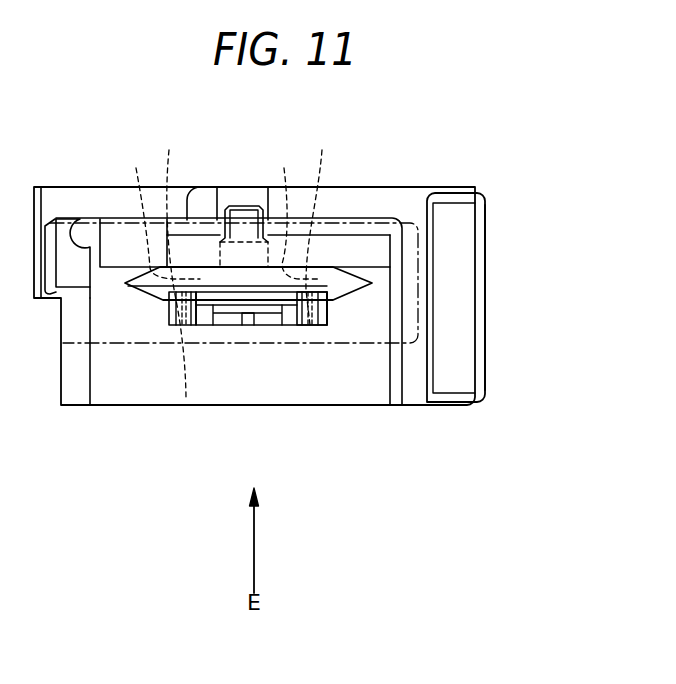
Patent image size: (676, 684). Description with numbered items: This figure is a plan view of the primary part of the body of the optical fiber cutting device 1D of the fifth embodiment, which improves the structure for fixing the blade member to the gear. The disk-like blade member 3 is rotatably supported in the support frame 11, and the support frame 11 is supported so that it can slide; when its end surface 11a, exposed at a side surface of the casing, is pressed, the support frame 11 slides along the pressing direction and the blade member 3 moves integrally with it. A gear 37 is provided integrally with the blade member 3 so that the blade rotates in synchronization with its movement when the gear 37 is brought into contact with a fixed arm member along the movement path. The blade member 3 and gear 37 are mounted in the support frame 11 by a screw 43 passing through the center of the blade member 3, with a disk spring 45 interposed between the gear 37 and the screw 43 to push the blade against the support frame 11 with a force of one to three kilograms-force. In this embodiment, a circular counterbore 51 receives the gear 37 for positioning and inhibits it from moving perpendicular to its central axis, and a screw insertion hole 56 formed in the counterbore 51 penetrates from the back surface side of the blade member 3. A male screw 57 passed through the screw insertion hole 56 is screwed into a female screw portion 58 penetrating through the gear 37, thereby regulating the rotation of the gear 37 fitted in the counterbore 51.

The optical fiber cutting device 1D is at (496, 361).
The support frame 11 is at (411, 248).
The end surface 11a is at (486, 300).
The disk-like blade member 3 is at (328, 267).
The gear 37 is at (323, 302).
The screw 43 is at (265, 312).
The disk spring 45 is at (222, 302).
The circular counterbore 51 is at (323, 298).
The screw insertion hole 56 is at (218, 212).
The male screw 57 is at (244, 265).
The female screw portion 58 is at (175, 327).